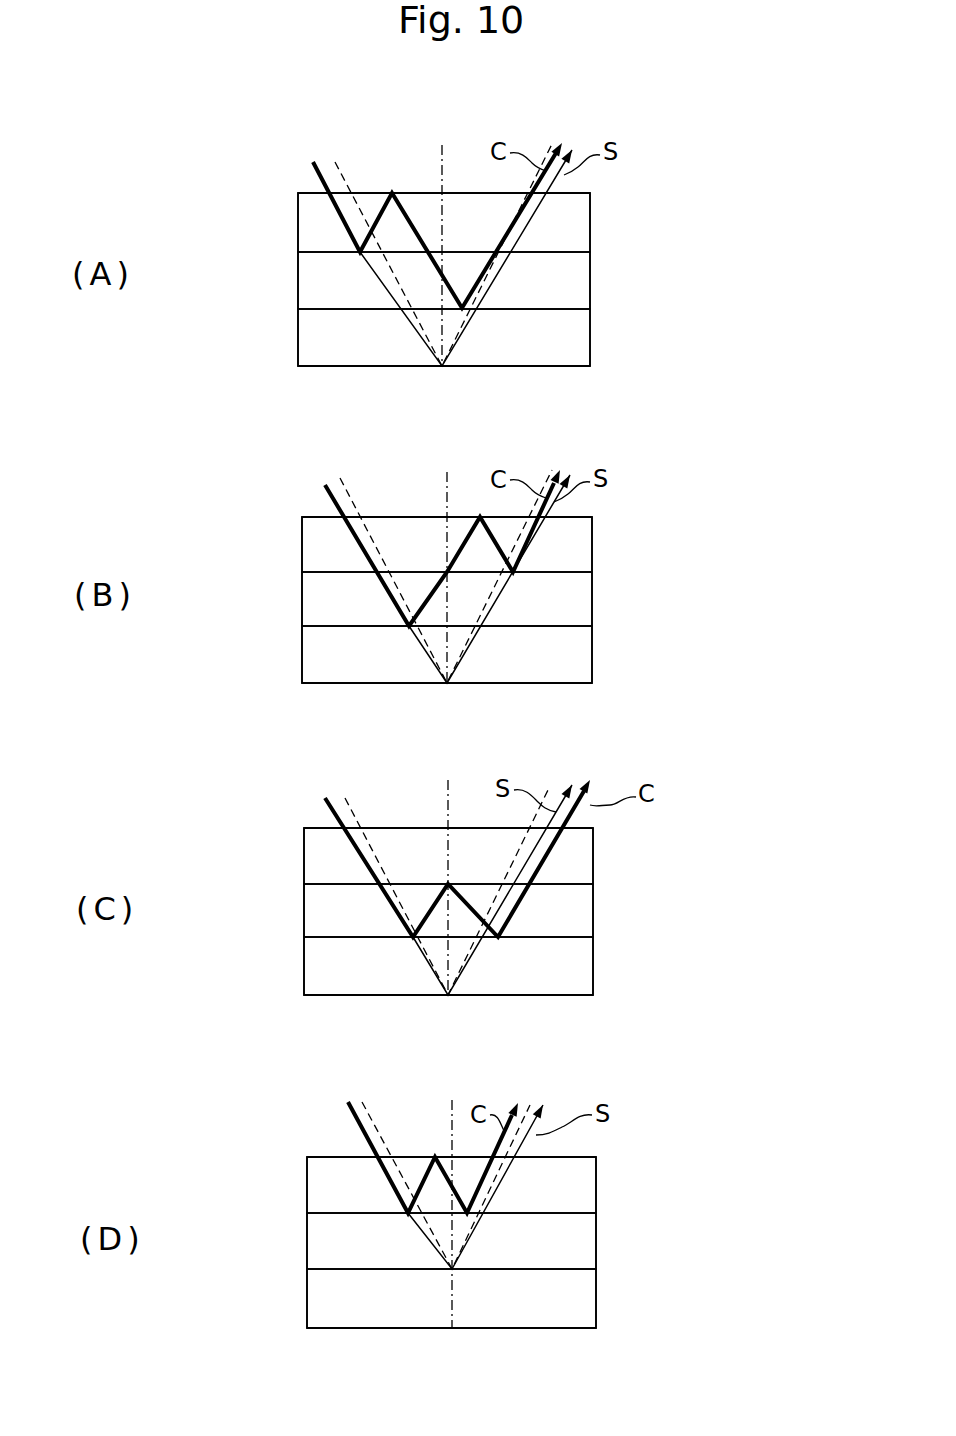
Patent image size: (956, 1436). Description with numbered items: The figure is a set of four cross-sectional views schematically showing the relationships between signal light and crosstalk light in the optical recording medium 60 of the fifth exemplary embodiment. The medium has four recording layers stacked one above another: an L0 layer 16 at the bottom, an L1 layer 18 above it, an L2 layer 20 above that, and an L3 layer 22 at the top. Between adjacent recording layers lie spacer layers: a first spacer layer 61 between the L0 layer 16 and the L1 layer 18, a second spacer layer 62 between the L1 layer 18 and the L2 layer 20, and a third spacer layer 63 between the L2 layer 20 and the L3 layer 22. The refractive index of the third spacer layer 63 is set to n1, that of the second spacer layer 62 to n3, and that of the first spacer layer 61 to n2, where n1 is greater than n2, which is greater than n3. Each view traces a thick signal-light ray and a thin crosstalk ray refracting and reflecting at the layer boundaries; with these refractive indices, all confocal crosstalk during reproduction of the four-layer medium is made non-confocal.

The L0 layer 16 is at (312, 361).
The L1 layer 18 is at (312, 304).
The L2 layer 20 is at (312, 247).
The L3 layer 22 is at (312, 188).
The optical recording medium 60 is at (247, 154).
The first spacer layer 61 is at (577, 333).
The second spacer layer 62 is at (577, 269).
The third spacer layer 63 is at (577, 221).